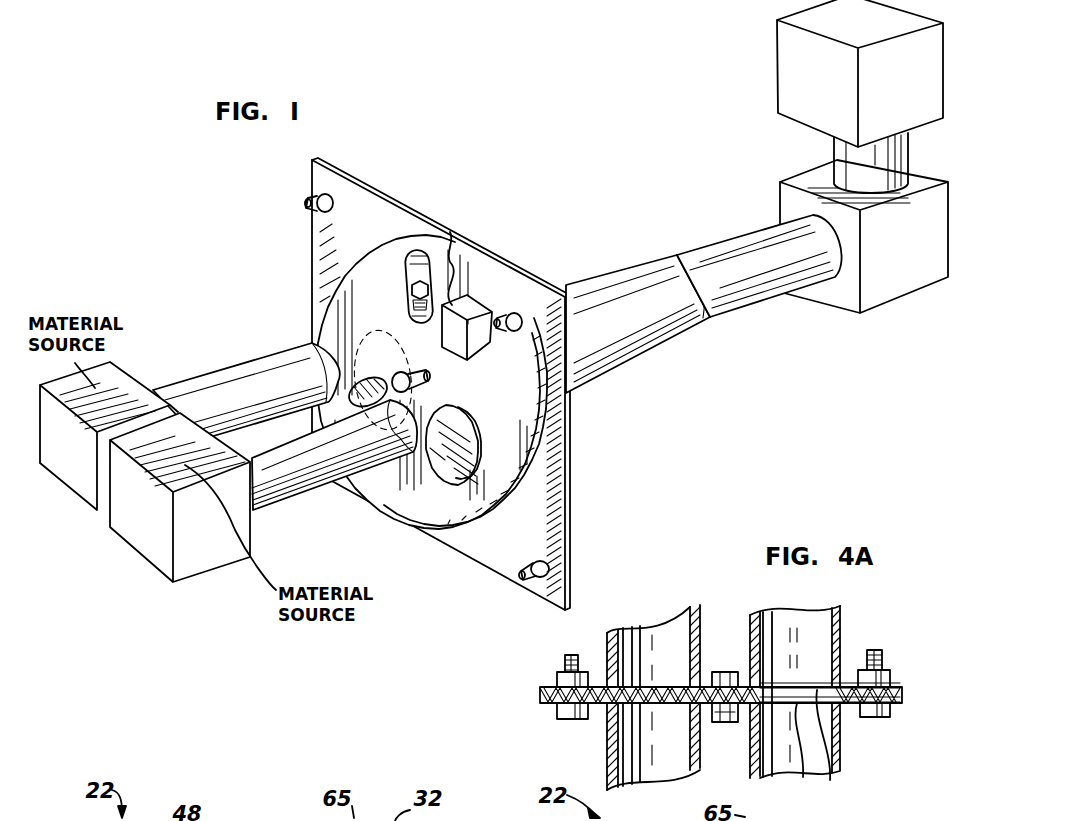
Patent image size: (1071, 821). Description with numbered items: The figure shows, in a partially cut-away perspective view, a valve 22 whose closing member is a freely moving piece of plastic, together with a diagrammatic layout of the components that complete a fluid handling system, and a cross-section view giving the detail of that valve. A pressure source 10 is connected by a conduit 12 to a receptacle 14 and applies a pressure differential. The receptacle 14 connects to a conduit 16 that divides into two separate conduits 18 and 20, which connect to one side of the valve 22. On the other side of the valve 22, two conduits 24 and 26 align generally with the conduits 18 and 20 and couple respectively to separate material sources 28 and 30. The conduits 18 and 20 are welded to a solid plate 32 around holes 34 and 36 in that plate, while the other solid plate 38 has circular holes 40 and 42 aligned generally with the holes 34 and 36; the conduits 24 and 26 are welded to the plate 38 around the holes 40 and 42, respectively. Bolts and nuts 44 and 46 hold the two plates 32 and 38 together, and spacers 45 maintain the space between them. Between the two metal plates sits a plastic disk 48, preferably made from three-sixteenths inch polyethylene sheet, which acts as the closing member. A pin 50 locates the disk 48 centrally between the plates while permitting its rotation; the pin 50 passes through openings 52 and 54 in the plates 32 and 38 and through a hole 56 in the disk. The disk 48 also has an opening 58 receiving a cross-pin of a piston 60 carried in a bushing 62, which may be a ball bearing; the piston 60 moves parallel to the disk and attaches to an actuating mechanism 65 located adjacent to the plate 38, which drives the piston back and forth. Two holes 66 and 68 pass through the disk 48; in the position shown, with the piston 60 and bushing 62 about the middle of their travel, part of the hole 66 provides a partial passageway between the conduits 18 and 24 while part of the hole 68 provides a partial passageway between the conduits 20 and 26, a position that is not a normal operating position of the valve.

In FIG. 1, the pressure source 10 is at (722, 60).
In FIG. 1, the conduit 12 is at (835, 160).
In FIG. 1, the receptacle 14 is at (943, 330).
In FIG. 1, the conduit 16 is at (744, 303).
In FIG. 1, the conduit 18 is at (634, 358).
In FIG. 1, the conduit 20 is at (590, 287).
In FIG. 4A, the conduit 20 is at (845, 748).
In FIG. 1, the valve 22 is at (574, 556).
In FIG. 1, the conduit 24 is at (302, 498).
In FIG. 4A, the conduit 24 is at (662, 626).
In FIG. 1, the conduit 26 is at (262, 372).
In FIG. 4A, the conduit 26 is at (842, 634).
In FIG. 1, the material source 28 is at (188, 568).
In FIG. 4A, the material source 28 is at (610, 760).
In FIG. 1, the material source 30 is at (80, 465).
In FIG. 1, the solid plate 32 is at (568, 540).
In FIG. 4A, the solid plate 32 is at (540, 700).
In FIG. 4A, the hole 34 is at (658, 708).
In FIG. 4A, the hole 36 is at (802, 778).
In FIG. 1, the solid plate 38 is at (500, 292).
In FIG. 4A, the solid plate 38 is at (540, 688).
In FIG. 4A, the circular hole 40 is at (658, 688).
In FIG. 4A, the circular hole 42 is at (798, 683).
In FIG. 1, the bolts and nuts 44 is at (307, 205).
In FIG. 4A, the bolts and nuts 44 is at (556, 717).
In FIG. 1, the spacers 45 is at (337, 192).
In FIG. 1, the bolts and nuts 46 is at (516, 318).
In FIG. 4A, the bolts and nuts 46 is at (557, 682).
In FIG. 1, the plastic disk 48 is at (540, 478).
In FIG. 4A, the plastic disk 48 is at (540, 692).
In FIG. 1, the pin 50 is at (408, 374).
In FIG. 4A, the pin 50 is at (718, 672).
In FIG. 4A, the opening 52 is at (734, 724).
In FIG. 4A, the opening 54 is at (736, 672).
In FIG. 4A, the hole 56 is at (730, 722).
In FIG. 1, the opening 58 is at (407, 265).
In FIG. 1, the piston 60 is at (412, 298).
In FIG. 1, the bushing 62 is at (413, 315).
In FIG. 1, the actuating mechanism 65 is at (468, 310).
In FIG. 1, the hole 66 is at (458, 450).
In FIG. 1, the hole 68 is at (380, 387).
In FIG. 4A, the hole 68 is at (825, 745).